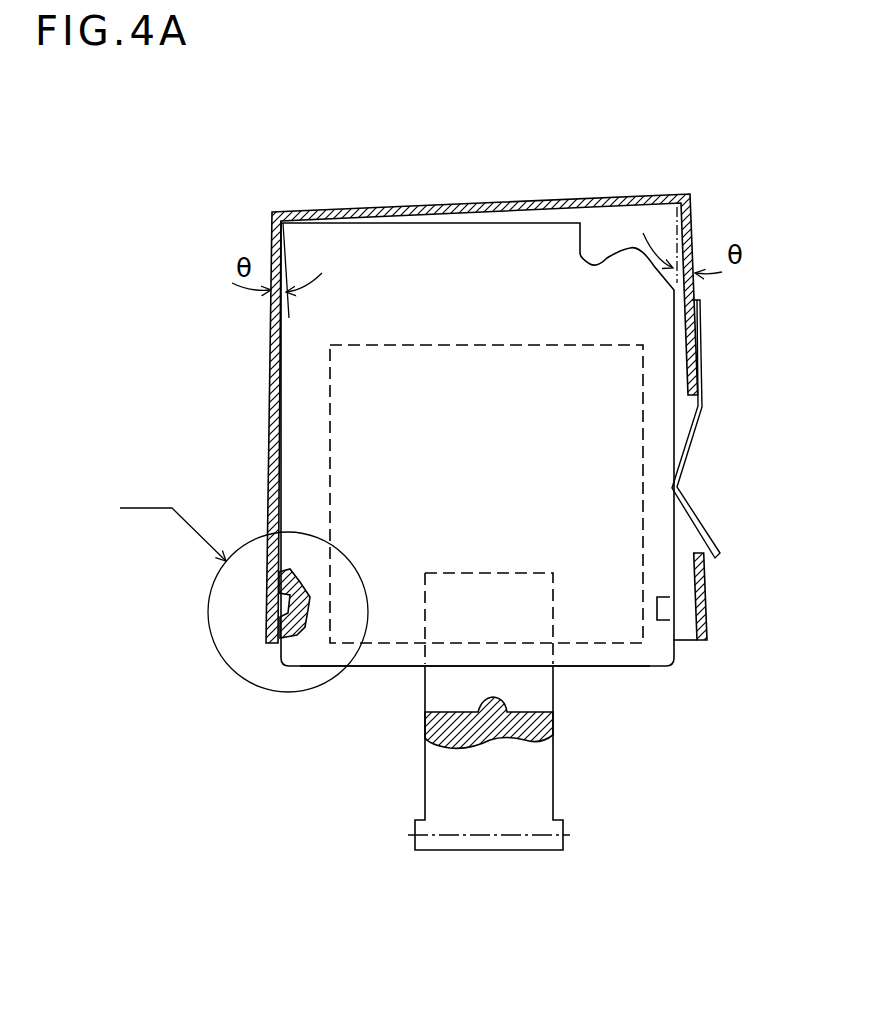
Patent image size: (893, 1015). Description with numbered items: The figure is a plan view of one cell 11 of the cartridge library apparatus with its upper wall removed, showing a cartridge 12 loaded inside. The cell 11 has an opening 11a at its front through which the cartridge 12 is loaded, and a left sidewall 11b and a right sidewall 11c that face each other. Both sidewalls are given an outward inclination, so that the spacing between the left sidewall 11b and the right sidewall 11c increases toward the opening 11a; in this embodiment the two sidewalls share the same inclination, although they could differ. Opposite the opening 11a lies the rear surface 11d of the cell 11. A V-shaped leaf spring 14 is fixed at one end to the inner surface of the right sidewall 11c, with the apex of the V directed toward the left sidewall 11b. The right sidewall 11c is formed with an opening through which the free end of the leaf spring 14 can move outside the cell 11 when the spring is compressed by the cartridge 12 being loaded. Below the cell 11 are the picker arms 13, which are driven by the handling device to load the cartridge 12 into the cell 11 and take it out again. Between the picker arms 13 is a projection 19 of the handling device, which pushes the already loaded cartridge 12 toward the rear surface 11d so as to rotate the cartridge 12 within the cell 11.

The cell 11 is at (506, 196).
The opening 11a is at (397, 632).
The left sidewall 11b is at (268, 437).
The right sidewall 11c is at (706, 596).
The rear surface 11d is at (397, 206).
The cartridge 12 is at (355, 383).
The picker arms 13 is at (540, 805).
The V-shaped leaf spring 14 is at (697, 465).
The projection 19 is at (493, 700).